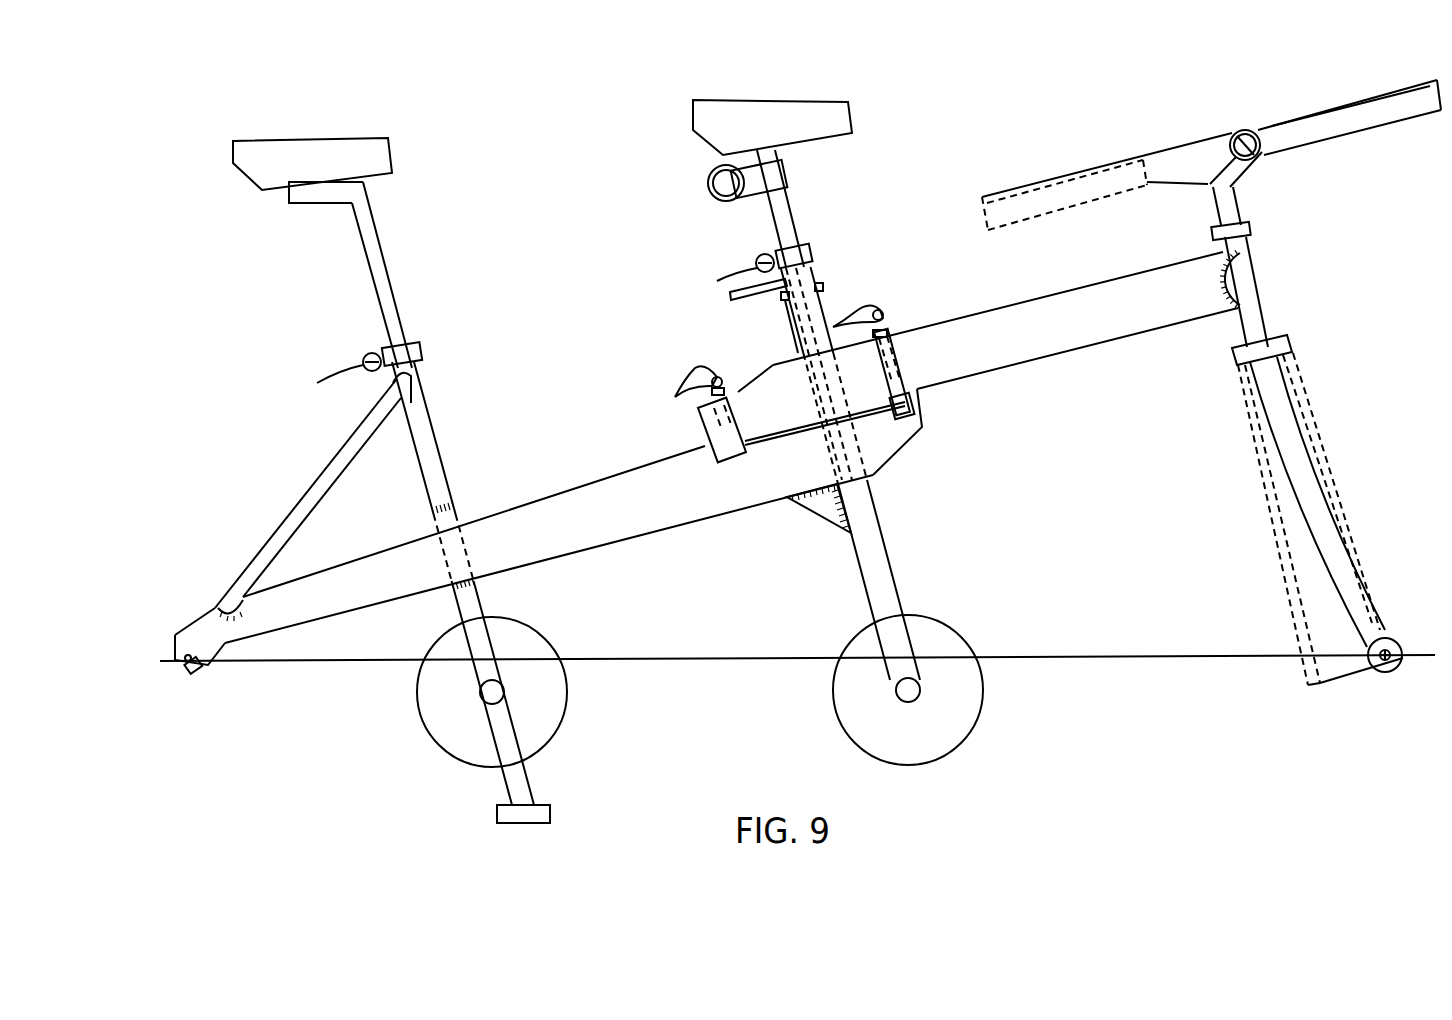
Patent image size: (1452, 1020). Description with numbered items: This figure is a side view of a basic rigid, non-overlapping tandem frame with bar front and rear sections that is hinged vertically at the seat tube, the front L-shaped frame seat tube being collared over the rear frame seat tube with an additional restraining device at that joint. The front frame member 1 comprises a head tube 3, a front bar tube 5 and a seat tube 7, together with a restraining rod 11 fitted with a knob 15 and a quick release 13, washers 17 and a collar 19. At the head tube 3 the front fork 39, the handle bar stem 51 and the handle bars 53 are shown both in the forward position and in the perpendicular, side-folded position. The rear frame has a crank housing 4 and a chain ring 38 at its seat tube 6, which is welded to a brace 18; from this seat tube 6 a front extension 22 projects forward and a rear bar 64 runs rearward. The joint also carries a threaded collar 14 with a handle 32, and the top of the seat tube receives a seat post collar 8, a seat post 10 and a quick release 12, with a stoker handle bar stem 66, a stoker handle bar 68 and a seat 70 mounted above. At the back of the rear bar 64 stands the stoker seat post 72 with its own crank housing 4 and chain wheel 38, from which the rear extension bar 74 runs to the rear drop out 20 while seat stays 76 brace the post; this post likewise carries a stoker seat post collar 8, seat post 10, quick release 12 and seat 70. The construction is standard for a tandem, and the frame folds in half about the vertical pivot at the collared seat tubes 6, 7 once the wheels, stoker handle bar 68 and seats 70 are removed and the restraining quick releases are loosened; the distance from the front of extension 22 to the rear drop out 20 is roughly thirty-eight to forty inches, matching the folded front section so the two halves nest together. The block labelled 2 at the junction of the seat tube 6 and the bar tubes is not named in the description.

The front frame member 1 is at (1031, 273).
The frame connector block 2 is at (787, 369).
The head tube 3 is at (1256, 275).
The crank housing 4 is at (504, 690).
The front bar tube 5 is at (1071, 331).
The seat tube 6 is at (826, 299).
The seat tube 7 is at (794, 318).
The seat post collar 8 is at (424, 350).
The seat post 10 is at (394, 293).
The restraining rod 11 is at (711, 420).
The quick release 12 is at (363, 355).
The quick release 13 is at (706, 377).
The threaded collar 14 is at (819, 263).
The knob 15 is at (919, 402).
The washers 17 is at (736, 397).
The brace 18 is at (835, 501).
The collar 19 is at (705, 399).
The rear drop out 20 is at (188, 673).
The front extension 22 is at (893, 440).
The handle 32 is at (719, 293).
The chain ring 38 is at (528, 720).
The front fork 39 is at (1301, 440).
The handle bar stem 51 is at (1221, 192).
The handle bars 53 is at (1086, 184).
The rear bar 64 is at (689, 487).
The stoker handle bar stem 66 is at (788, 168).
The stoker handle bar 68 is at (713, 167).
The seat 70 is at (360, 154).
The stoker seat post 72 is at (419, 410).
The rear extension bar 74 is at (359, 601).
The seat stays 76 is at (316, 471).